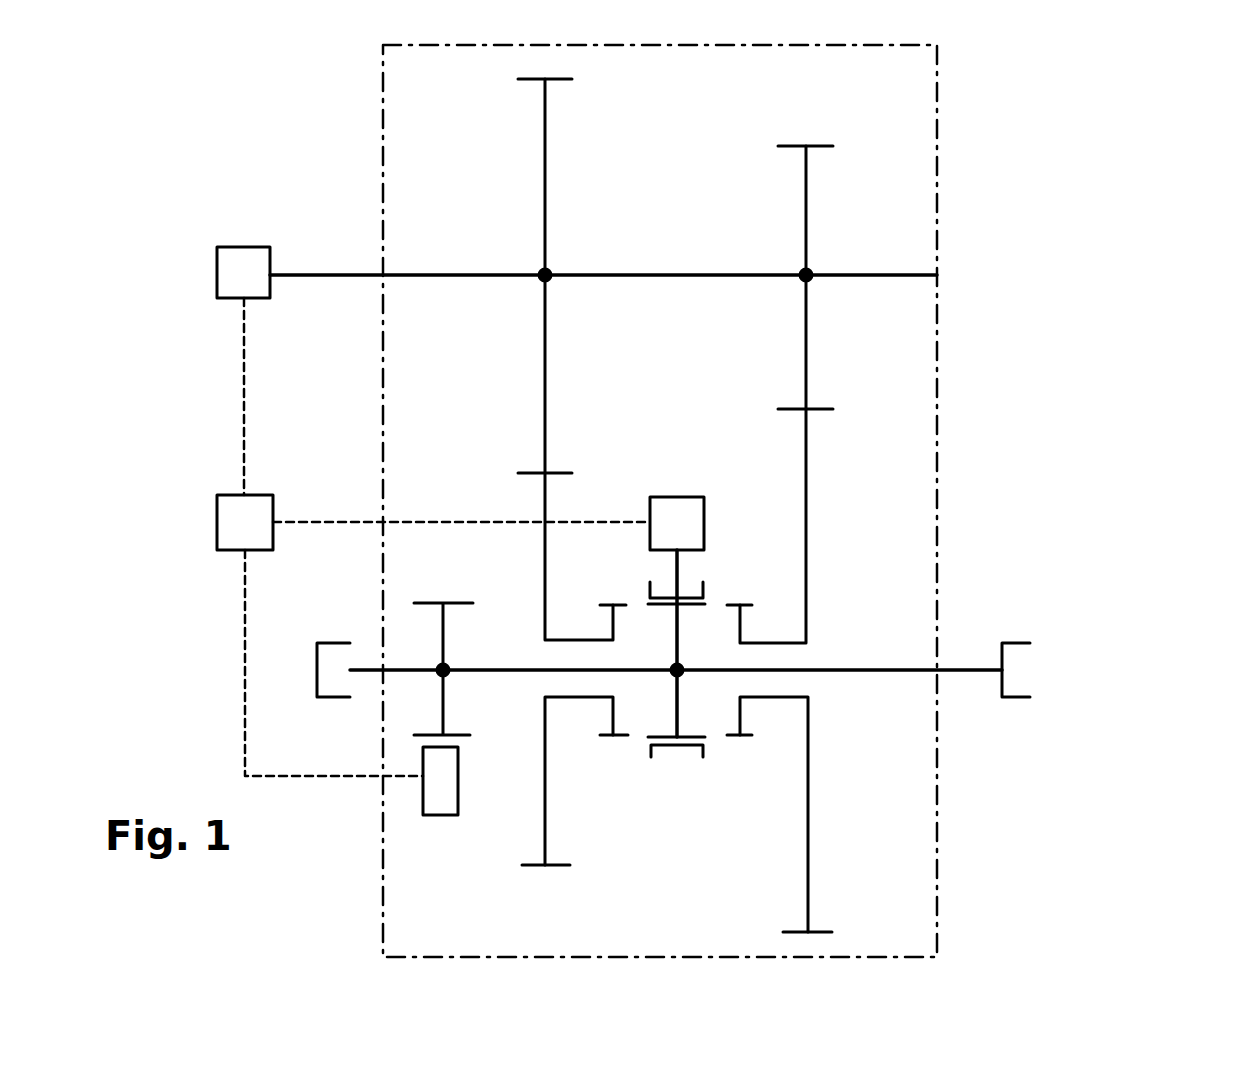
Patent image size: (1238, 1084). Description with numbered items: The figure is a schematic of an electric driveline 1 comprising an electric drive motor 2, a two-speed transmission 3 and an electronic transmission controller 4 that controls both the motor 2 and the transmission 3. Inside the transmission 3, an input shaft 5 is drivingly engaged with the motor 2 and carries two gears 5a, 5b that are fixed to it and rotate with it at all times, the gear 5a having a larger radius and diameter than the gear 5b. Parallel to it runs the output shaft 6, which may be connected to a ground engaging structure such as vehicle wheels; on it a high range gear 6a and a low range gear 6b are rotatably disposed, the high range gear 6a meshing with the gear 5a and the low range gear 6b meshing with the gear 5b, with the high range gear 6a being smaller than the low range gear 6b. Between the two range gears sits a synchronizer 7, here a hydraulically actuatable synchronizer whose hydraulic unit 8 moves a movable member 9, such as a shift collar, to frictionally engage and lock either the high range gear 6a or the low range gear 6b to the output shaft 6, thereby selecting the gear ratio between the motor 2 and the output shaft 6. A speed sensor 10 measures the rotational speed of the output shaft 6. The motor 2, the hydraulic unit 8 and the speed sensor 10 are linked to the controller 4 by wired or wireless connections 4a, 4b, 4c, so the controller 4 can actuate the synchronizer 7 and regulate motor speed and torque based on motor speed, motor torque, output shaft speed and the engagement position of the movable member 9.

The electric driveline 1 is at (1093, 235).
The electric drive motor 2 is at (236, 247).
The transmission 3 is at (978, 165).
The electronic transmission controller 4 is at (215, 520).
The connection 4a is at (247, 422).
The connection 4b is at (408, 520).
The connection 4c is at (242, 635).
The input shaft 5 is at (410, 272).
The gear 5a is at (552, 224).
The gear 5b is at (810, 228).
The output shaft 6 is at (842, 668).
The high range gear 6a is at (550, 795).
The low range gear 6b is at (808, 823).
The synchronizer 7 is at (727, 802).
The hydraulic unit 8 is at (678, 492).
The movable member 9 is at (705, 590).
The speed sensor 10 is at (433, 817).